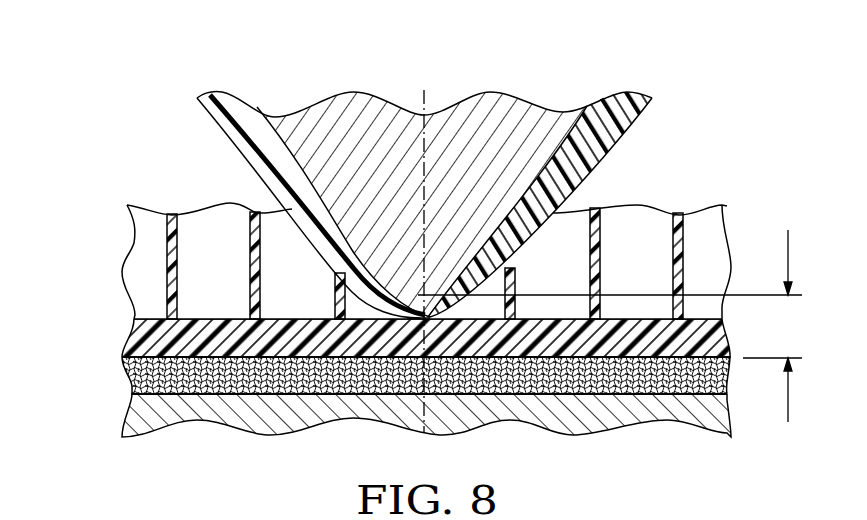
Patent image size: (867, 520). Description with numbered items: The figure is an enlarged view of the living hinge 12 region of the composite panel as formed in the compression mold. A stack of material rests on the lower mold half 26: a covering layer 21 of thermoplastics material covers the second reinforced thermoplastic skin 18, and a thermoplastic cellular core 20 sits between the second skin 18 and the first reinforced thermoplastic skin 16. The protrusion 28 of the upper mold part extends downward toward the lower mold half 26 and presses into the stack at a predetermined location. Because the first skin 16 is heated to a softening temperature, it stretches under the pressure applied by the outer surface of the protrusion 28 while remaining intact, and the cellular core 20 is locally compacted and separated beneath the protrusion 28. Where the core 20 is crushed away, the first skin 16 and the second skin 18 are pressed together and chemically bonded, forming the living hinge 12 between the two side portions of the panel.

The living hinge 12 is at (428, 322).
The first reinforced thermoplastic skin 16 is at (593, 170).
The second reinforced thermoplastic skin 18 is at (122, 337).
The thermoplastic cellular core 20 is at (122, 268).
The covering layer 21 is at (123, 378).
The lower mold half 26 is at (120, 415).
The protrusion 28 is at (492, 112).